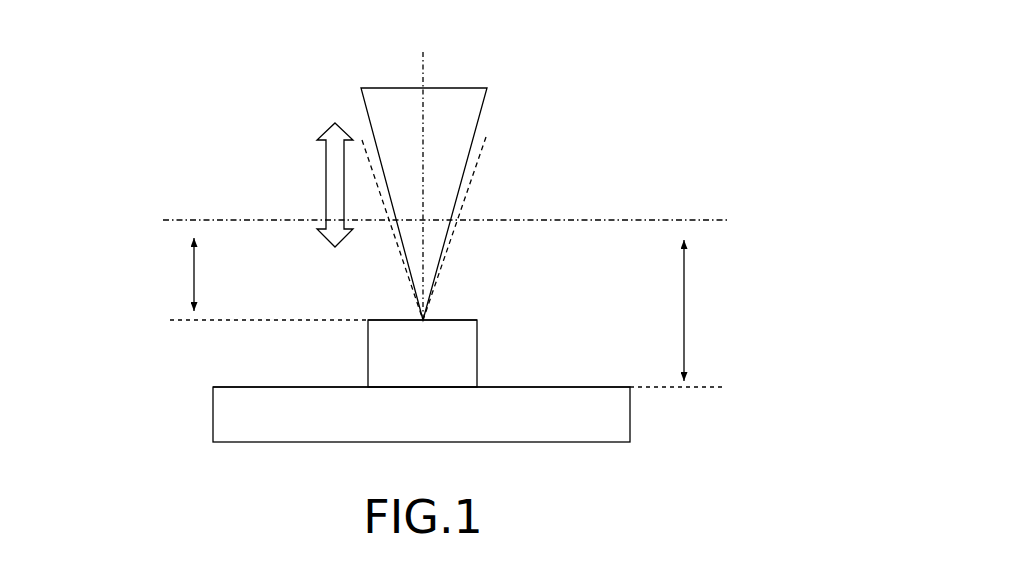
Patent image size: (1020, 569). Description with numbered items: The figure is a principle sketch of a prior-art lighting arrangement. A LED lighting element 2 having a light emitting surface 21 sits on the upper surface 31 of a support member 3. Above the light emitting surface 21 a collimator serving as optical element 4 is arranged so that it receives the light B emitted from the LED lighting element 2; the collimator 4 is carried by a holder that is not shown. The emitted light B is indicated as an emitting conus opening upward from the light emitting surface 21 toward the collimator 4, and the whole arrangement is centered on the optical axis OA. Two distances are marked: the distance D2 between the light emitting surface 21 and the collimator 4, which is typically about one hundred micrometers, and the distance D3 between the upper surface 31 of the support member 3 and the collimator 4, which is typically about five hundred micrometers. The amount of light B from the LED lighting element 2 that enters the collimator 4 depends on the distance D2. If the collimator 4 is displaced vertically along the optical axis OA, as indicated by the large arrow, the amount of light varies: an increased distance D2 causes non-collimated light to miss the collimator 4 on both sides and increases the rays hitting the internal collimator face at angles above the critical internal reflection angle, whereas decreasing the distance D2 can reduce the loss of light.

The optical axis OA is at (422, 169).
The collimator 4 is at (486, 113).
The light B is at (400, 276).
The LED lighting element 2 is at (366, 353).
The light emitting surface 21 is at (459, 317).
The support member 3 is at (211, 413).
The upper surface 31 is at (573, 382).
The distance D2 is at (170, 274).
The distance D3 is at (715, 310).